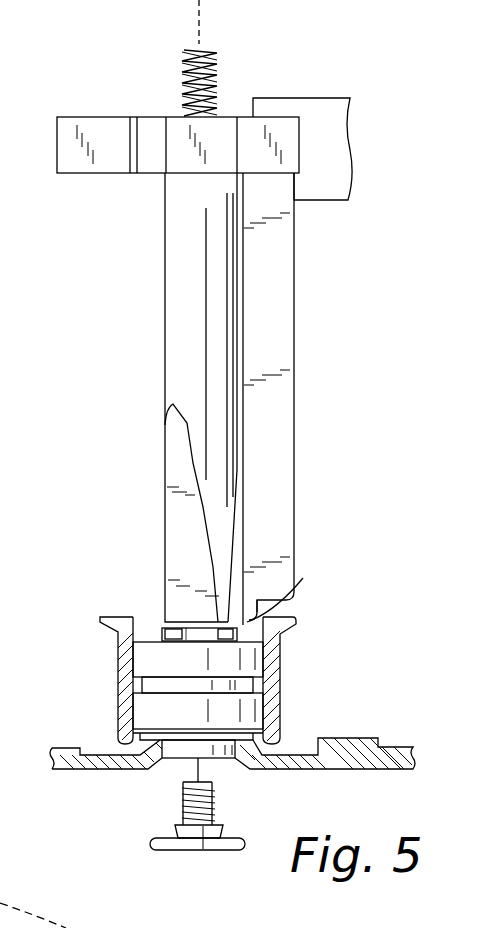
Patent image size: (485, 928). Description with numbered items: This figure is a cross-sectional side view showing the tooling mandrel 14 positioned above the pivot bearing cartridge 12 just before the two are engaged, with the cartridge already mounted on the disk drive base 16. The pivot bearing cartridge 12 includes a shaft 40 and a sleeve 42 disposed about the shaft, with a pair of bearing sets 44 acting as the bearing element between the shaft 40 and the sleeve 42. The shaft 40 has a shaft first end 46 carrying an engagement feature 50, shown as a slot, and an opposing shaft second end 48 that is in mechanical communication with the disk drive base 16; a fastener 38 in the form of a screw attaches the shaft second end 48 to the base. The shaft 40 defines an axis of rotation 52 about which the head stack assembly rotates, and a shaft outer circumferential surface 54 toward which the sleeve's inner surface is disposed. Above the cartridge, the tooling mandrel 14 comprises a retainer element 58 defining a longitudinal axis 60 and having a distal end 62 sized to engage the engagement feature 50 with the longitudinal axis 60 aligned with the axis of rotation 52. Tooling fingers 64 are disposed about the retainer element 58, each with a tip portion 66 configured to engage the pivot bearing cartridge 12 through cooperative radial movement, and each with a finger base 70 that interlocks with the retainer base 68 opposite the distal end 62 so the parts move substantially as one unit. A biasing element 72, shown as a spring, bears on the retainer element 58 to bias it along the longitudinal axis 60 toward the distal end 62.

The pivot bearing cartridge 12 is at (87, 623).
The tooling mandrel 14 is at (103, 293).
The disk drive base 16 is at (67, 748).
The fastener 38 is at (215, 805).
The shaft 40 is at (188, 633).
The sleeve 42 is at (282, 686).
The bearing sets 44 is at (145, 662).
The shaft first end 46 is at (170, 632).
The shaft second end 48 is at (183, 748).
The engagement feature 50 is at (303, 578).
The axis of rotation 52 is at (200, 768).
The shaft outer circumferential surface 54 is at (160, 633).
The retainer element 58 is at (165, 371).
The longitudinal axis 60 is at (199, 24).
The distal end 62 is at (200, 632).
The tooling fingers 64 is at (294, 335).
The tip portion 66 is at (250, 612).
The retainer base 68 is at (292, 146).
The finger base 70 is at (327, 100).
The biasing element 72 is at (183, 79).